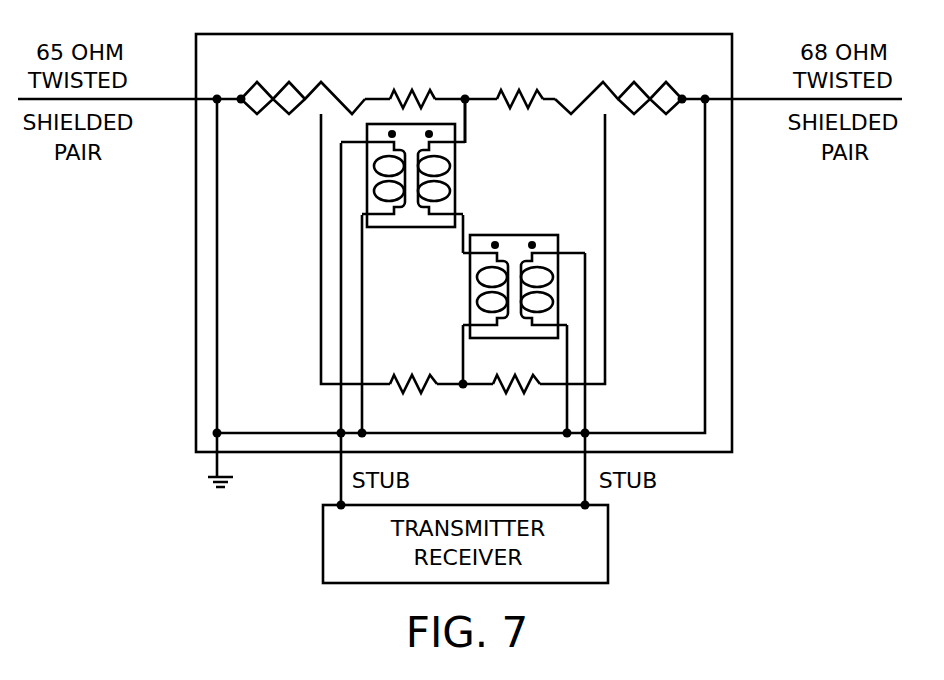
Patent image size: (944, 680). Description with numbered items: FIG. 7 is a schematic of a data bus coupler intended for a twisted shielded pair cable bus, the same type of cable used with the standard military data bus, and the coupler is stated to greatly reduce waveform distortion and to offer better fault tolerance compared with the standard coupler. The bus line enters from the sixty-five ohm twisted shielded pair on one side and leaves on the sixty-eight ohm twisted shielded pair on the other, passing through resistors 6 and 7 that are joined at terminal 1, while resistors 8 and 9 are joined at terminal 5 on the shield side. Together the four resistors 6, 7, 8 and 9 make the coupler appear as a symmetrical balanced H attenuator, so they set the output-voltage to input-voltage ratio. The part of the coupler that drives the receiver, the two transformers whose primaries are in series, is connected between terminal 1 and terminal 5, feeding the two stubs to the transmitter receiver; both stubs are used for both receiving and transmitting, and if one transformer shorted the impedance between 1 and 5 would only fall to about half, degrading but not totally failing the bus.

The bus coupler terminal 1 is at (454, 101).
The bus coupler terminal 5 is at (465, 375).
The resistor 6 is at (412, 84).
The resistor 7 is at (520, 84).
The resistor 8 is at (413, 366).
The resistor 9 is at (516, 366).